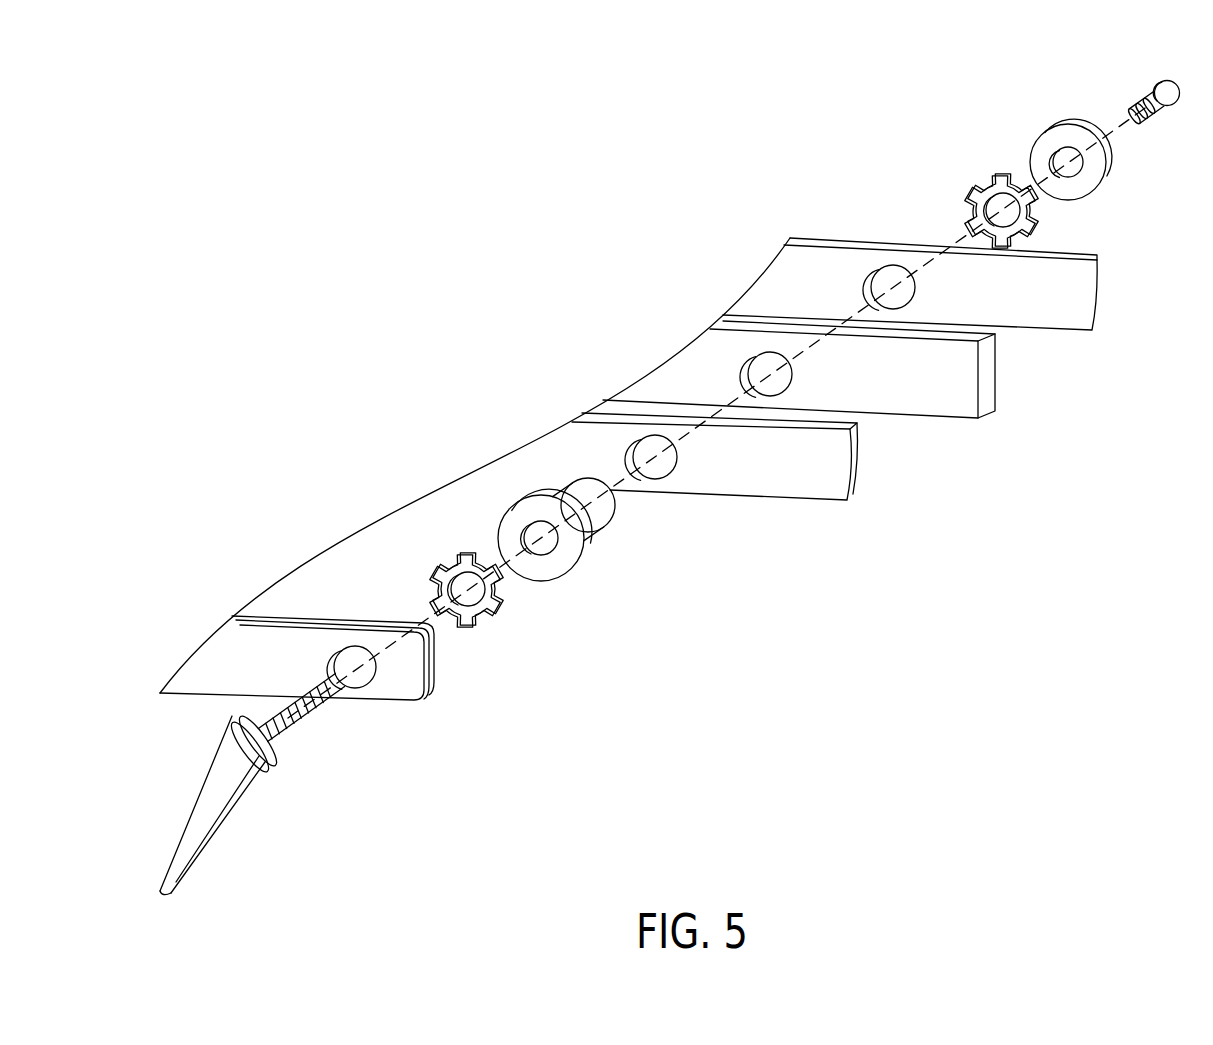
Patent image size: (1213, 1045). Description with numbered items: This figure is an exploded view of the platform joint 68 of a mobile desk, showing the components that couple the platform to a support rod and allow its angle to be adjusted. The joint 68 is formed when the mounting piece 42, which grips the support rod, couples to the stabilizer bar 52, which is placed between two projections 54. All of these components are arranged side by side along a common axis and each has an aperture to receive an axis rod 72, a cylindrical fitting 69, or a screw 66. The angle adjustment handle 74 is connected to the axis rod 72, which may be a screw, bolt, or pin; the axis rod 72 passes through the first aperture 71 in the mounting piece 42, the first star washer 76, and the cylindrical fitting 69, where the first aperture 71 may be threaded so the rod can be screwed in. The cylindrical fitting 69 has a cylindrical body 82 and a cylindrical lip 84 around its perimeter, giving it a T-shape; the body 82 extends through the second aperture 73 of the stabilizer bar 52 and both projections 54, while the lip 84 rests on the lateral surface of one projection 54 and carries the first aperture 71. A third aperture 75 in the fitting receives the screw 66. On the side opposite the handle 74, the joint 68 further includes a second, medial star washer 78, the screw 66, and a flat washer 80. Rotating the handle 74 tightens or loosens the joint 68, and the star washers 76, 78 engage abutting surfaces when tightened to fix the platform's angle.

The mounting piece 42 is at (397, 707).
The stabilizer bar 52 is at (918, 420).
The projections 54 is at (782, 500).
The screw 66 is at (1136, 98).
The platform joint 68 is at (668, 625).
The cylindrical fitting 69 is at (564, 485).
The first aperture 71 is at (350, 690).
The axis rod 72 is at (303, 728).
The second aperture 73 is at (893, 268).
The angle adjustment handle 74 is at (232, 817).
The third aperture 75 is at (999, 184).
The first star washer 76 is at (500, 610).
The second star washer 78 is at (975, 190).
The flat washer 80 is at (1043, 130).
The cylindrical body 82 is at (570, 483).
The cylindrical lip 84 is at (512, 503).